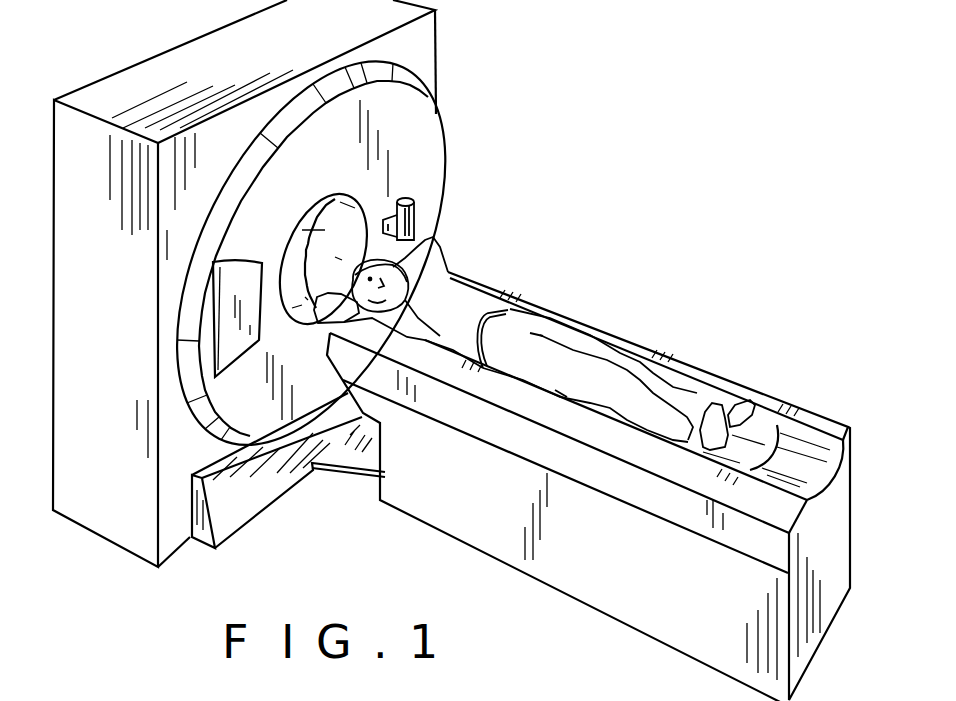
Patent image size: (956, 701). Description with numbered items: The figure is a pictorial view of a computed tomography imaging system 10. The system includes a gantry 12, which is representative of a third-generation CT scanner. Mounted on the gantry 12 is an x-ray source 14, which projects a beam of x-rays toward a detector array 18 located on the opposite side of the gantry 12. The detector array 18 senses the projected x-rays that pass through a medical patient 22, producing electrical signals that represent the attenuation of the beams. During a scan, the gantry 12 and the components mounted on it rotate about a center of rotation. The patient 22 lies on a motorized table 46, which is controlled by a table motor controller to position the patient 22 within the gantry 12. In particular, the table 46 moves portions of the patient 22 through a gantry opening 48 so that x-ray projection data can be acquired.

The computed tomography (CT) imaging system 10 is at (353, 483).
The gantry 12 is at (88, 148).
The x-ray source 14 is at (416, 218).
The detector array 18 is at (233, 338).
The medical patient 22 is at (457, 302).
The motorized table 46 is at (463, 503).
The gantry opening 48 is at (310, 233).